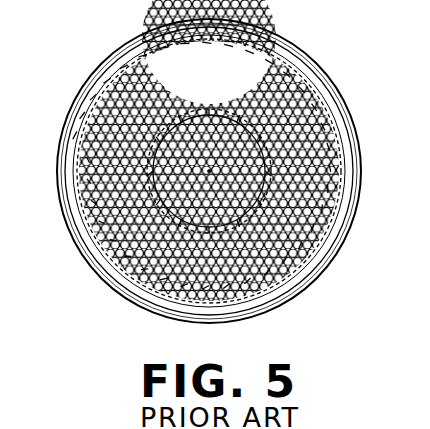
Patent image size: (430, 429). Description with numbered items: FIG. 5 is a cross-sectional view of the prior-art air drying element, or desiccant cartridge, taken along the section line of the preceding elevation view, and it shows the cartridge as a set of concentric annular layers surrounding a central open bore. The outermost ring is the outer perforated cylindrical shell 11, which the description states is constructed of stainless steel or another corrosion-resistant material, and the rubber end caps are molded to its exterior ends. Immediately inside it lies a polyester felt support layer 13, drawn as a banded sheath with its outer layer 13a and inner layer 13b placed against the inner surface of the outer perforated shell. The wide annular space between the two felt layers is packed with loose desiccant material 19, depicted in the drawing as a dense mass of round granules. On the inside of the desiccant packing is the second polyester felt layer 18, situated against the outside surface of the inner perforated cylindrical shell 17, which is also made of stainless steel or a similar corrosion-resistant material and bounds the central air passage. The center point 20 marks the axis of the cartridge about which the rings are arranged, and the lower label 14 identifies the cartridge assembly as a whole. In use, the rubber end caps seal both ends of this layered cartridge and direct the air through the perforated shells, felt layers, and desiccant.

The hose 11 is at (93, 92).
The outer sheath 13 is at (356, 128).
The outer sheath layer 13a is at (315, 67).
The inner sheath layer 13b is at (288, 171).
The fitting 14 is at (354, 421).
The outer jacket 17 is at (305, 279).
The liner 18 is at (123, 68).
The granular filler beads 19 is at (322, 250).
The core tube 20 is at (113, 262).